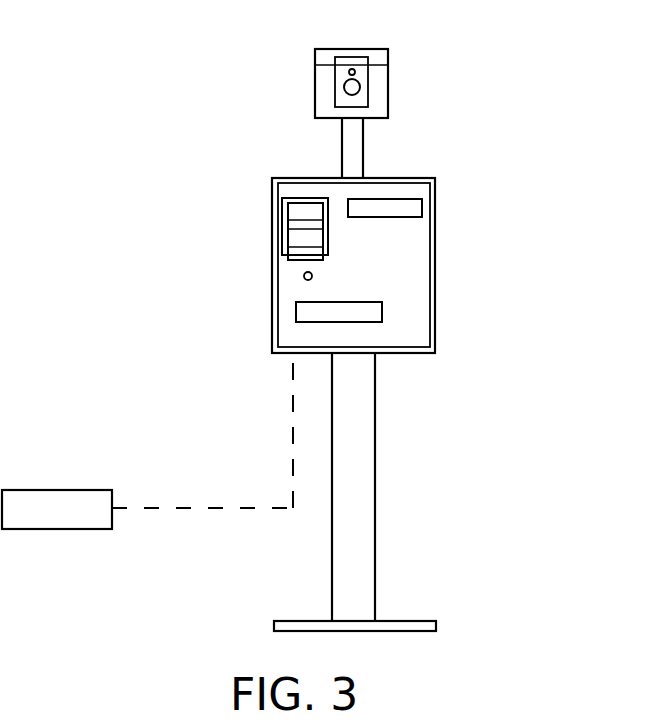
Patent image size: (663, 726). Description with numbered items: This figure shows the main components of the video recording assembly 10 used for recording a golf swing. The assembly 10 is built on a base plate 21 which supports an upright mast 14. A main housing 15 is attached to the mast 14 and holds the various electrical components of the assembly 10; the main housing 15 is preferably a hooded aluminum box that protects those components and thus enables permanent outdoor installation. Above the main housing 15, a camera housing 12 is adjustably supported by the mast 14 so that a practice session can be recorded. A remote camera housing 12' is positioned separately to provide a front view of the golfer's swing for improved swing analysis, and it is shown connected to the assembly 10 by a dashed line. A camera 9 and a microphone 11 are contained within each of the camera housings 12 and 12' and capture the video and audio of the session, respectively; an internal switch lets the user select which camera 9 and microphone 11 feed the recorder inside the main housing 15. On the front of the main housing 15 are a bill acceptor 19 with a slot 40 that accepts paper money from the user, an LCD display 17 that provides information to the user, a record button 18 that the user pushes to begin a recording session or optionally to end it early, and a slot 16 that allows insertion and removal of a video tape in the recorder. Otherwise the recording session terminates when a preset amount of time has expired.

The camera 9 is at (344, 88).
The video recording assembly 10 is at (533, 300).
The microphone 11 is at (349, 70).
The camera housing 12 is at (386, 83).
The remote camera housing 12' is at (147, 445).
The mast 14 is at (357, 137).
The main housing 15 is at (434, 225).
The slot 16 is at (296, 312).
The LCD display 17 is at (426, 198).
The record button 18 is at (302, 278).
The bill acceptor 19 is at (282, 217).
The base plate 21 is at (417, 621).
The slot 40 is at (289, 228).